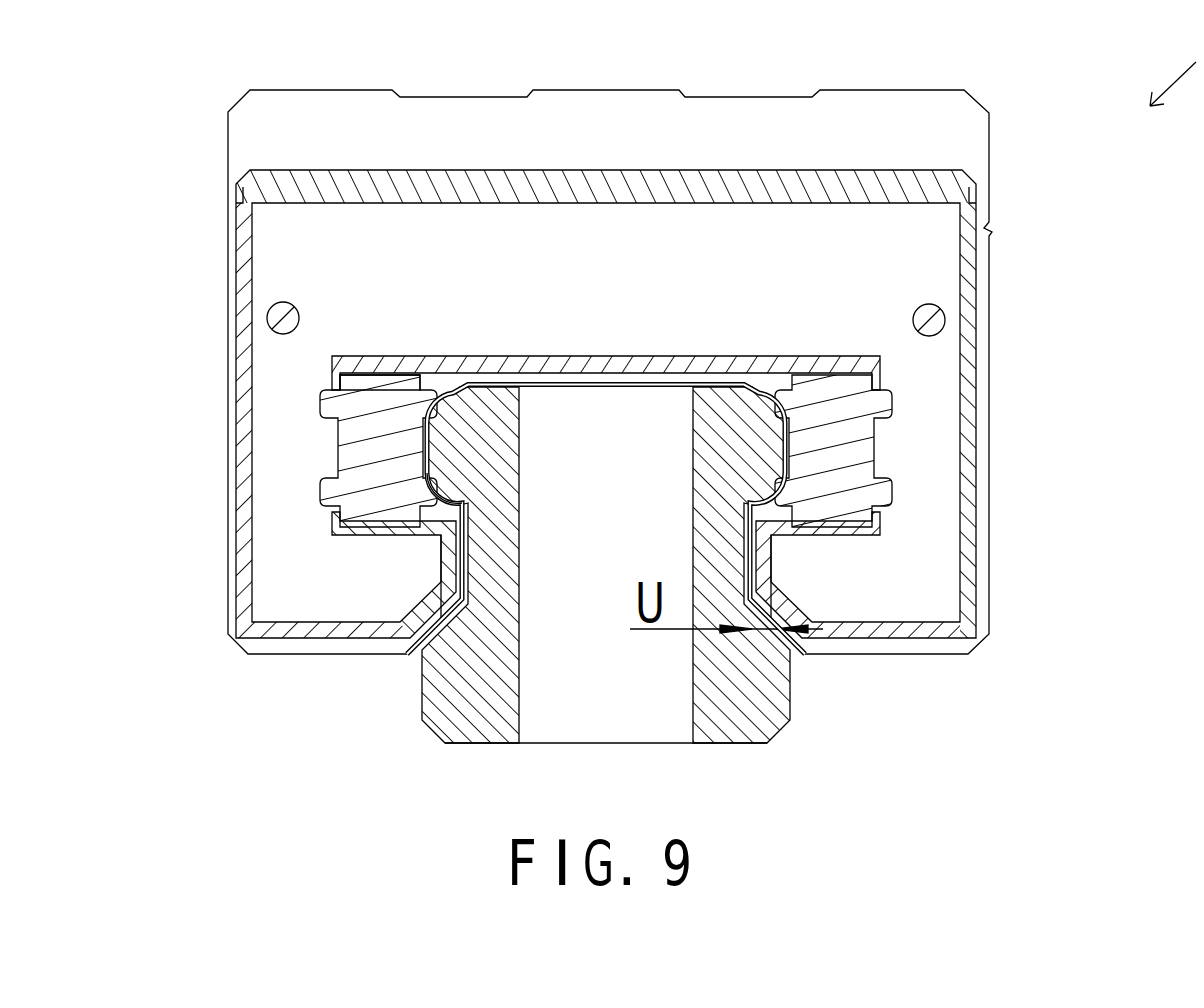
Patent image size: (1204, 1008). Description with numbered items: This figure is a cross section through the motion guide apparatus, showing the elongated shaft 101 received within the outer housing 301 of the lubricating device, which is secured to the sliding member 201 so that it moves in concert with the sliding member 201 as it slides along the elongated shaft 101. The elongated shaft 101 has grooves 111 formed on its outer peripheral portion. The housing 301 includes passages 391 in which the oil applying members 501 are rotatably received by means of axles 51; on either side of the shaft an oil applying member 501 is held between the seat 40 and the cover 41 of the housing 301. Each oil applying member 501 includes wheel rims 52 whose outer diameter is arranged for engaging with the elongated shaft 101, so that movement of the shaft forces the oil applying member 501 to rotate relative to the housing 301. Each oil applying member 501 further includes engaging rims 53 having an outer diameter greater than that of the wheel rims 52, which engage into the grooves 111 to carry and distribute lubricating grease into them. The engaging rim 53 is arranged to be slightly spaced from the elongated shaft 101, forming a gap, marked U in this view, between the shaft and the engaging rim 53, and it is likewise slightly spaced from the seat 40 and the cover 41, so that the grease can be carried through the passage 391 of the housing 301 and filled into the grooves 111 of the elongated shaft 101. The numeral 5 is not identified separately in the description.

The sliding member 201 is at (960, 127).
The outer housing 301 is at (241, 241).
The cover 41 is at (633, 357).
The seal assembly 5 is at (280, 285).
The oil applying member 501 is at (910, 284).
The axle 51 is at (375, 382).
The wheel rim 52 is at (337, 448).
The engaging rim 53 is at (888, 490).
The seat 40 is at (752, 604).
The passage 391 is at (845, 530).
The groove 111 is at (450, 480).
The elongated shaft 101 is at (748, 728).